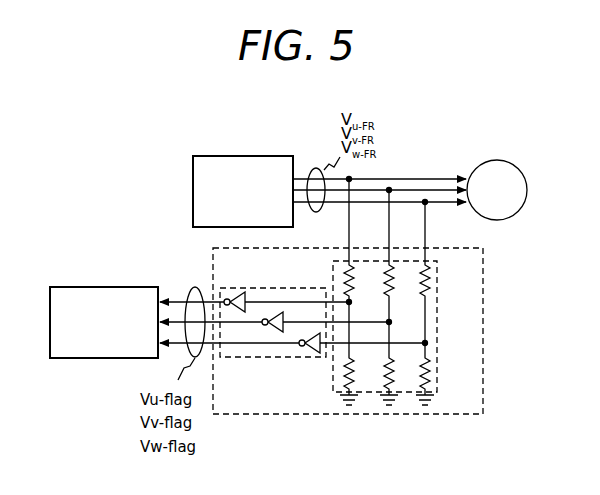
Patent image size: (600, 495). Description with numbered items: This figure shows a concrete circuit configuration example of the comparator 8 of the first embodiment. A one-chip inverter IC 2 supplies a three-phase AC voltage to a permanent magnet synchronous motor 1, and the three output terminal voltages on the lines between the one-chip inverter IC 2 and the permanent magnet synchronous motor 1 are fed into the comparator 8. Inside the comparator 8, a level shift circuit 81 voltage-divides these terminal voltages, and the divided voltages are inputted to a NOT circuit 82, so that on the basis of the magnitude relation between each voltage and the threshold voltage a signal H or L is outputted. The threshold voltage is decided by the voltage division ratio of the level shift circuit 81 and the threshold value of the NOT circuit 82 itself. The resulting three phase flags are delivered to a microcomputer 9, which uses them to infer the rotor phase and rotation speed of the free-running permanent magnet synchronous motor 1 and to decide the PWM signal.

The permanent magnet synchronous motor 1 is at (508, 165).
The one-chip inverter IC 2 is at (244, 156).
The comparator 8 is at (483, 342).
The microcomputer 9 is at (85, 287).
The level shift circuit 81 is at (437, 330).
The NOT circuit 82 is at (255, 291).